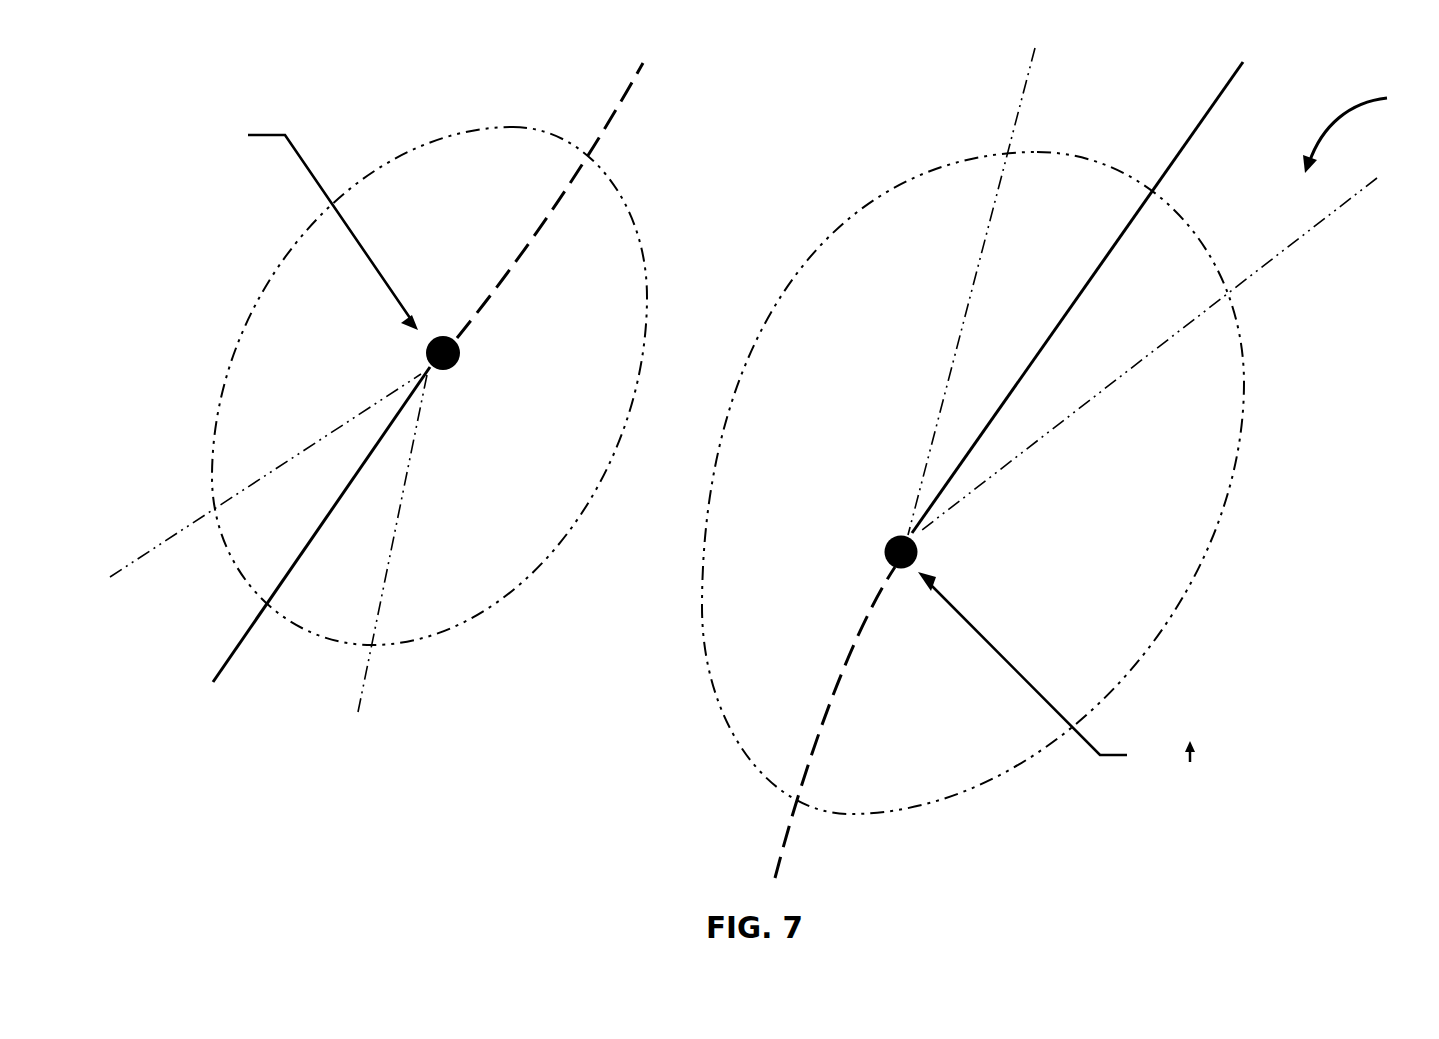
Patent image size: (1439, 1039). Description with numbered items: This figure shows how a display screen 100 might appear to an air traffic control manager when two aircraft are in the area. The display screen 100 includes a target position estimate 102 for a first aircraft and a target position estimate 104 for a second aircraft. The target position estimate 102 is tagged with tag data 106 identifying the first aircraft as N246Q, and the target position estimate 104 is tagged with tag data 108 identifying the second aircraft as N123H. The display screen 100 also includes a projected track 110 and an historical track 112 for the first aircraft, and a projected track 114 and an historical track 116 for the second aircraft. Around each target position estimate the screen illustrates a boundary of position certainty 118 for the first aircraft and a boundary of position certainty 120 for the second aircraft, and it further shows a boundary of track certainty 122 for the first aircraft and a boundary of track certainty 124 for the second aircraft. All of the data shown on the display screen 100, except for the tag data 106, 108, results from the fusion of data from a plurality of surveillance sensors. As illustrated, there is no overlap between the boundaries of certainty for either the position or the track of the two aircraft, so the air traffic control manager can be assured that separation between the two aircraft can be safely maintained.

The display screen 100 is at (1363, 129).
The target position estimate 102 is at (457, 366).
The target position estimate 104 is at (915, 561).
The tag data 106 is at (178, 135).
The tag data 108 is at (1250, 755).
The projected track 110 is at (233, 648).
The historical track 112 is at (617, 108).
The projected track 114 is at (1197, 135).
The historical track 116 is at (787, 830).
The boundary of position certainty 118 is at (508, 593).
The boundary of position certainty 120 is at (1242, 417).
The boundary of track certainty 122 is at (153, 547).
The boundary of track certainty 124 is at (1277, 258).